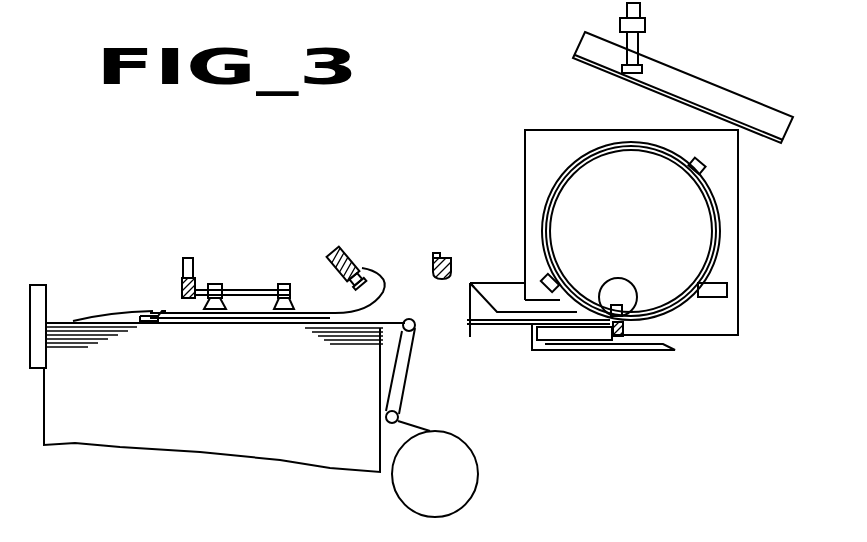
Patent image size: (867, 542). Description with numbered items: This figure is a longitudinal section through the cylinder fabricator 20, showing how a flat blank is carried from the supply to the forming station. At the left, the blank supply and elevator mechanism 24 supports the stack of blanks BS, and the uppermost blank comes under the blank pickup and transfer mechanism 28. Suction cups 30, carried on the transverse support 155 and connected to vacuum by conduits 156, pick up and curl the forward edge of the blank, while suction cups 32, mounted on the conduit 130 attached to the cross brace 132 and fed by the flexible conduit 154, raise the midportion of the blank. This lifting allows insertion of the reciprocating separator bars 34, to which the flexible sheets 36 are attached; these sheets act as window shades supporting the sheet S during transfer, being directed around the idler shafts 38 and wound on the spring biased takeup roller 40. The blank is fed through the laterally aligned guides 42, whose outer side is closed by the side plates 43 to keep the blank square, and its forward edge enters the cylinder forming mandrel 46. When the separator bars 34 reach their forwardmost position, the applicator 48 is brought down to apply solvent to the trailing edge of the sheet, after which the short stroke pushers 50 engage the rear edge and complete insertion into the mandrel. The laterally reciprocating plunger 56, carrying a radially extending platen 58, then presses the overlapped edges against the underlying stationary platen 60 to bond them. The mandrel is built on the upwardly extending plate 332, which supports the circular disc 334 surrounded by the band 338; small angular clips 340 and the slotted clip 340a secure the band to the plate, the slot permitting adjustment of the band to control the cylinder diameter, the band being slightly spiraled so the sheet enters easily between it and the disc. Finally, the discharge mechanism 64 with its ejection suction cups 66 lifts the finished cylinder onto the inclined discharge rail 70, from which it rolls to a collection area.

The cylinder fabricator 20 is at (235, 153).
The blank supply and elevator mechanism 24 is at (105, 438).
The blank pickup and transfer mechanism 28 is at (262, 290).
The suction cups 30 is at (360, 270).
The suction cups 32 is at (278, 310).
The separator bars 34 is at (155, 321).
The flexible sheets 36 is at (297, 327).
The idler shafts 38 is at (385, 411).
The spring biased takeup roller 40 is at (478, 468).
The laterally aligned guides 42 is at (482, 325).
The side plates 43 is at (488, 288).
The cylinder forming mandrel 46 is at (553, 178).
The applicator 48 is at (445, 255).
The short stroke pushers 50 is at (560, 351).
The plunger 56 is at (624, 280).
The platen 58 is at (619, 306).
The stationary platen 60 is at (621, 337).
The discharge mechanism 64 is at (650, 25).
The ejection suction cups 66 is at (644, 68).
The discharge rail 70 is at (750, 106).
The conduit 130 is at (238, 290).
The cross brace 132 is at (183, 285).
The flexible conduit 154 is at (183, 262).
The transverse support 155 is at (350, 258).
The conduits 156 is at (336, 256).
The upwardly extending plates 332 is at (585, 135).
The circular disc 334 is at (659, 211).
The band 338 is at (715, 202).
The angular clips 340 is at (703, 165).
The slotted clip 340a is at (730, 287).
The sheet S is at (365, 303).
The stack of blanks BS is at (236, 424).